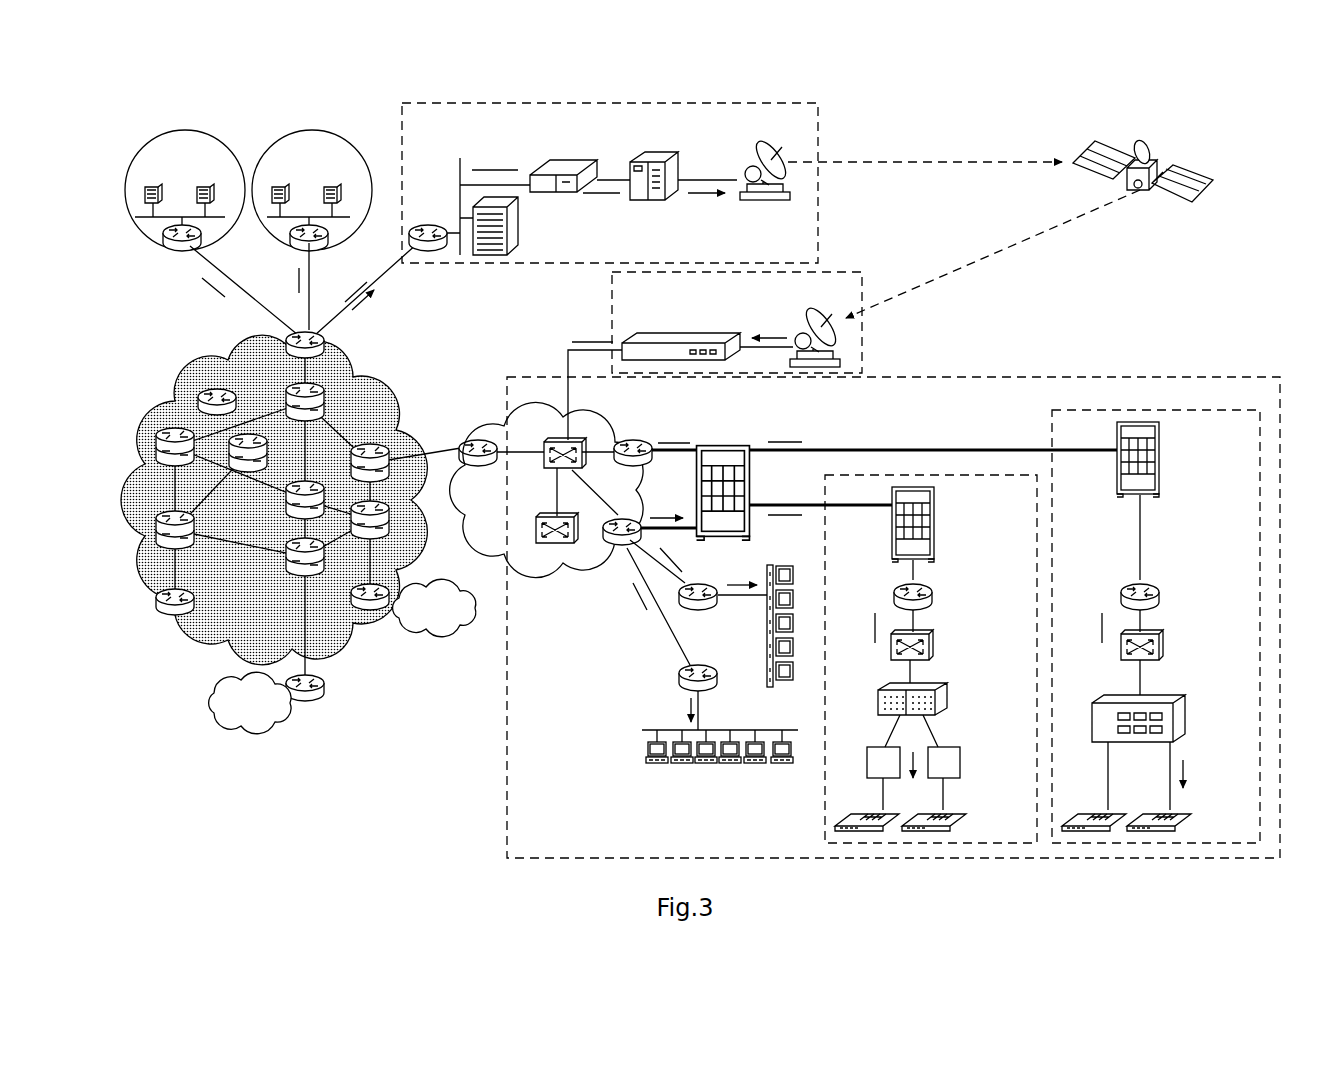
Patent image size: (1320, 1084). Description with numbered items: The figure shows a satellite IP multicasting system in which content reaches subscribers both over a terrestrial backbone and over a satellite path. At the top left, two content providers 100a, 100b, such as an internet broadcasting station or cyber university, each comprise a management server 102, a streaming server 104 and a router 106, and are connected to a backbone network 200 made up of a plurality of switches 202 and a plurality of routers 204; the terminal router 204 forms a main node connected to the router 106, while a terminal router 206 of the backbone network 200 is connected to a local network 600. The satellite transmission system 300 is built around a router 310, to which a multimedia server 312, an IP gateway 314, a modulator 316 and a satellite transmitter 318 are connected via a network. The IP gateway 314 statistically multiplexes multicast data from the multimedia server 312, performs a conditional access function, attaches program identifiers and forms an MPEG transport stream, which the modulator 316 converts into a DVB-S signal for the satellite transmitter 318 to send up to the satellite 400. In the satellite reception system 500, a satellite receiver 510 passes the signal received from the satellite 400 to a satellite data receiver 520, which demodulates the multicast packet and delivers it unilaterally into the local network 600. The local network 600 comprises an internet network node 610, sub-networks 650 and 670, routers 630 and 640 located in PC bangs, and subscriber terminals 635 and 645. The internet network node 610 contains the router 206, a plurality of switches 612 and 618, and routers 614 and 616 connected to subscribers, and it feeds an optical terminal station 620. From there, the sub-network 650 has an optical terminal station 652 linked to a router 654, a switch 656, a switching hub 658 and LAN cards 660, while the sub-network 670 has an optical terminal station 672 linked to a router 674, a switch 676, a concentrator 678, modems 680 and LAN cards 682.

The content provider 100a is at (319, 175).
The content provider 100b is at (185, 130).
The management server 102 is at (281, 183).
The streaming server 104 is at (333, 183).
The router 106 is at (328, 242).
The backbone network 200 is at (294, 529).
The switch 202 is at (325, 402).
The router 204 is at (198, 395).
The terminal router 206 is at (472, 437).
The satellite transmission system 300 is at (640, 183).
The router 310 is at (428, 223).
The multimedia server 312 is at (520, 228).
The IP gateway 314 is at (580, 162).
The modulator 316 is at (660, 152).
The satellite transmitter 318 is at (765, 148).
The satellite 400 is at (1147, 148).
The satellite reception system 500 is at (717, 334).
The satellite receiver 510 is at (815, 312).
The satellite data receiver 520 is at (688, 333).
The local network 600 is at (1062, 377).
The internet network node 610 is at (557, 510).
The switch 612 is at (570, 437).
The router 614 is at (636, 438).
The router 616 is at (620, 540).
The switch 618 is at (557, 545).
The optical terminal station 620 is at (725, 445).
The router 630 is at (708, 605).
The subscriber terminal 635 is at (778, 565).
The router 640 is at (712, 685).
The subscriber terminal 645 is at (652, 730).
The sub-network 650 is at (1121, 622).
The optical terminal station 652 is at (1161, 458).
The router 654 is at (1159, 592).
The switch 656 is at (1162, 645).
The switching hub 658 is at (1187, 712).
The LAN cards 660 is at (1192, 815).
The sub-network 670 is at (897, 659).
The optical terminal station 672 is at (936, 523).
The router 674 is at (933, 592).
The switch 676 is at (933, 645).
The concentrator 678 is at (948, 695).
The modems 680 is at (962, 762).
The LAN cards 682 is at (963, 816).